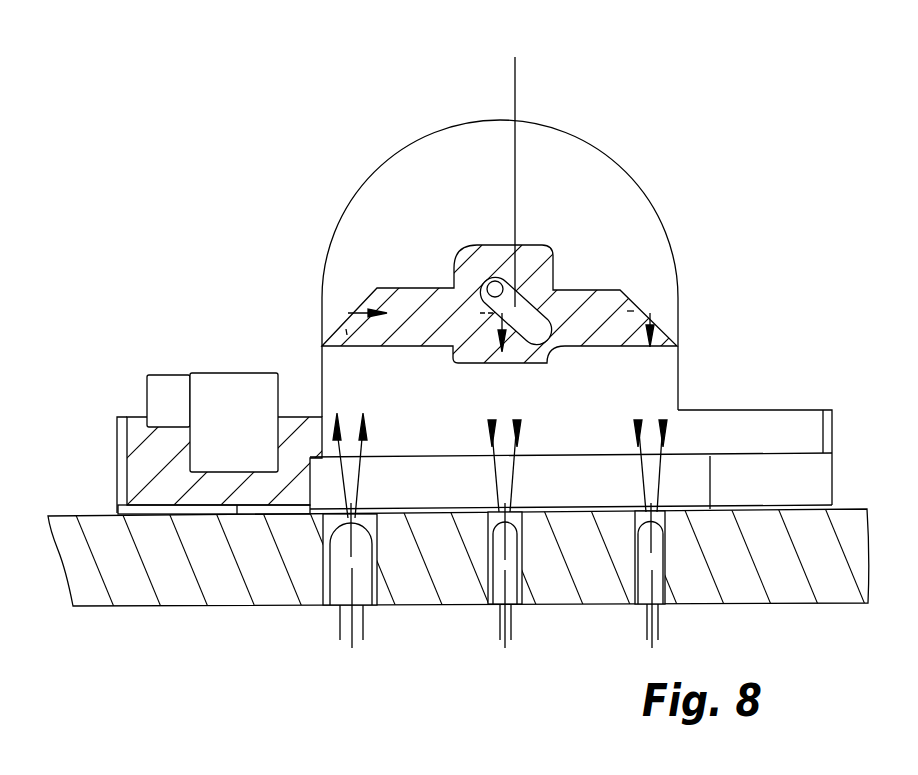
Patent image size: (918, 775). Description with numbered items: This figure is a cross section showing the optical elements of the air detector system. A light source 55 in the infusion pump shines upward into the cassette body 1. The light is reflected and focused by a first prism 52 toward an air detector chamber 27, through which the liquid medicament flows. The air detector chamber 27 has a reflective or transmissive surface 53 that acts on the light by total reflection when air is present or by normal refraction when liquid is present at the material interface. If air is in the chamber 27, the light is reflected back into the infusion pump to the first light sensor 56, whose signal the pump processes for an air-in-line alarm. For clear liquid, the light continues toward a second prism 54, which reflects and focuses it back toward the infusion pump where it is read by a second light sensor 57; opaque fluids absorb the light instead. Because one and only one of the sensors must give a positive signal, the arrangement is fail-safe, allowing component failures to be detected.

The cassette body 1 is at (575, 117).
The air detector chamber 27 is at (505, 188).
The first prism 52 is at (348, 313).
The reflective or transmissive surface 53 is at (472, 350).
The second prism 54 is at (650, 313).
The light source 55 is at (352, 568).
The first light sensor 56 is at (505, 570).
The second light sensor 57 is at (652, 570).